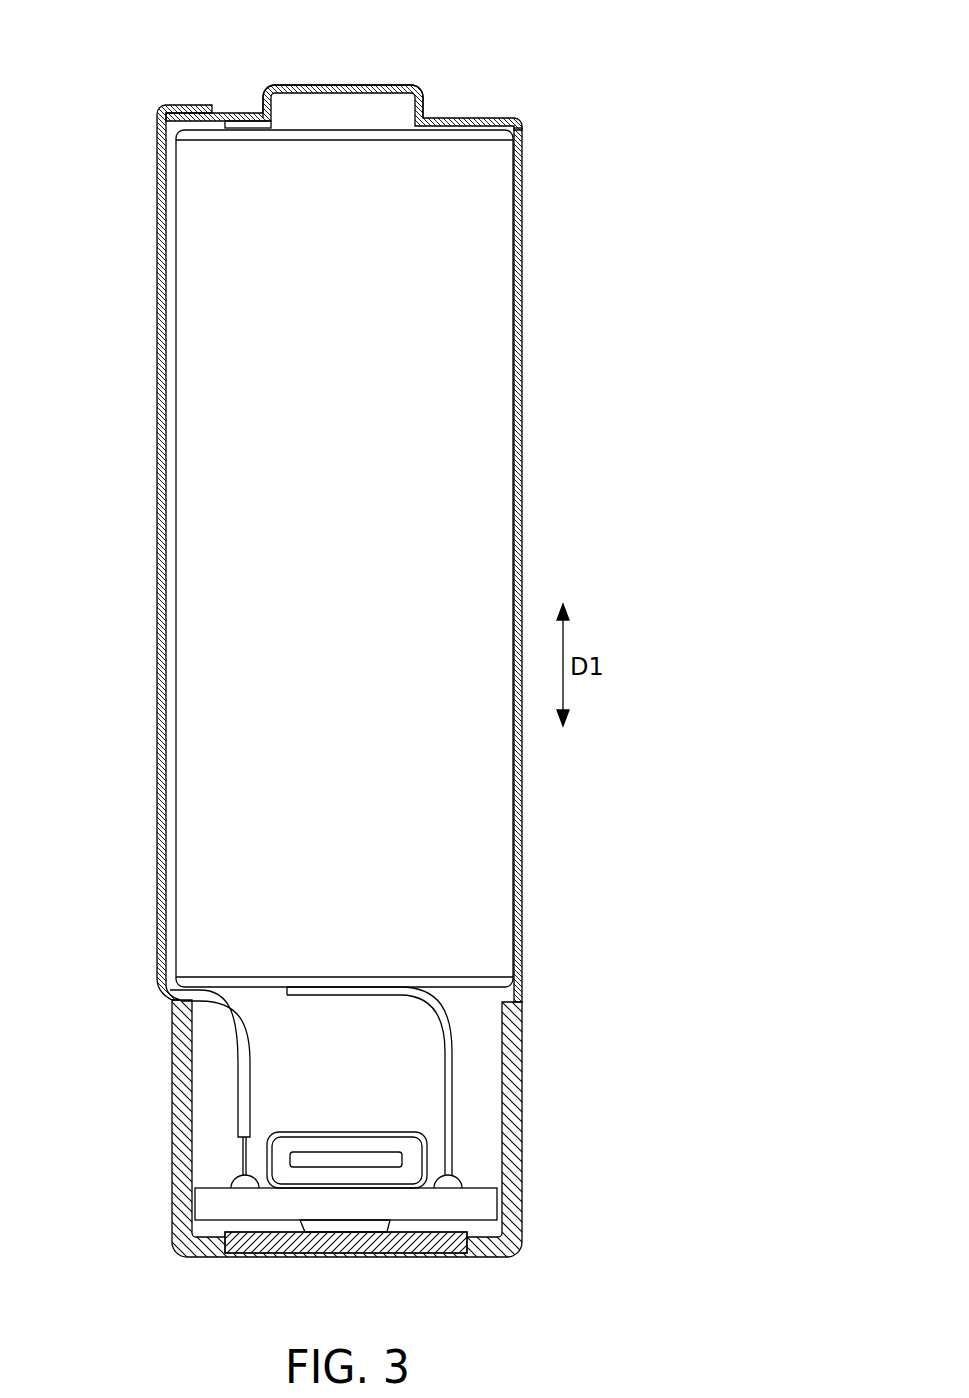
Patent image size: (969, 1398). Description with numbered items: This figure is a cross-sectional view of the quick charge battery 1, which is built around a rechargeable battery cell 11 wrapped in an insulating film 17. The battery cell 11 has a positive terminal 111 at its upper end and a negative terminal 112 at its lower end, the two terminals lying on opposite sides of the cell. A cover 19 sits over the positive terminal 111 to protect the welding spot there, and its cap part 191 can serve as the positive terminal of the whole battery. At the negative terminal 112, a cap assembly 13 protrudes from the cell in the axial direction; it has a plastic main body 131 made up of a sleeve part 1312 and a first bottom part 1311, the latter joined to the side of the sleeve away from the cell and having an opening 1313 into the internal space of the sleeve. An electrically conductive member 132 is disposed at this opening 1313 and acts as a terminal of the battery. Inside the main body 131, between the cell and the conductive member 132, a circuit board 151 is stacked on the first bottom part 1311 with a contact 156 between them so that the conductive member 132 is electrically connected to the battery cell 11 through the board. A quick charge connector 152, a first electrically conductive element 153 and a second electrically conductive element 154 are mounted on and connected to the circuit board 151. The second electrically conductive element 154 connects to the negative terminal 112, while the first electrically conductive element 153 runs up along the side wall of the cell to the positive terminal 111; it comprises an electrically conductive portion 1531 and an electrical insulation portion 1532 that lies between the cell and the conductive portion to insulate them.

The quick charge battery 1 is at (110, 39).
The battery cell 11 is at (457, 447).
The positive terminal 111 is at (317, 113).
The negative terminal 112 is at (458, 982).
The cap assembly 13 is at (682, 1135).
The main body 131 is at (617, 1188).
The first bottom part 1311 is at (485, 1253).
The sleeve part 1312 is at (508, 1207).
The opening 1313 is at (462, 1257).
The electrically conductive member 132 is at (443, 1240).
The circuit board 151 is at (213, 1188).
The quick charge connector 152 is at (343, 1147).
The first electrically conductive element 153 is at (82, 1052).
The electrically conductive portion 1531 is at (245, 1150).
The electrical insulation portion 1532 is at (245, 1062).
The second electrically conductive element 154 is at (446, 1089).
The contact 156 is at (348, 1228).
The insulating film 17 is at (521, 262).
The cover 19 is at (455, 118).
The cap part 191 is at (357, 85).